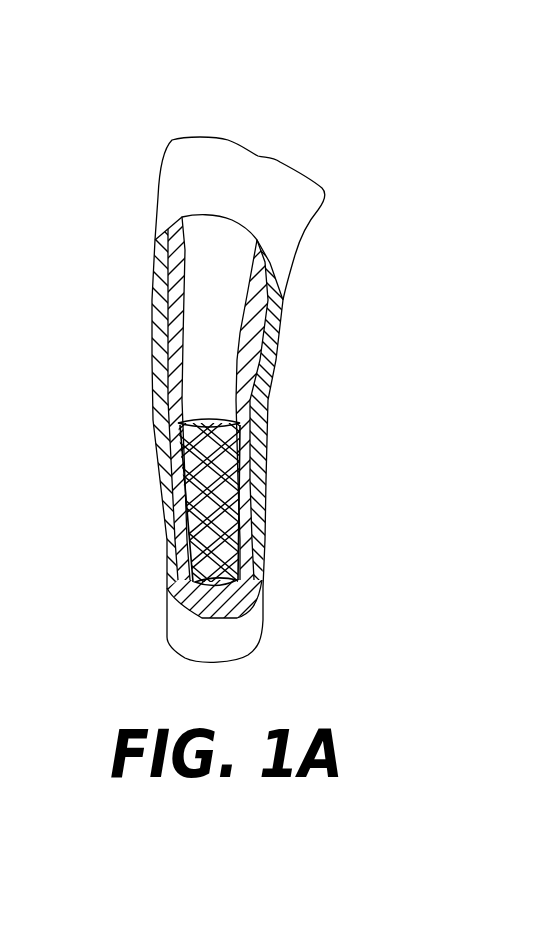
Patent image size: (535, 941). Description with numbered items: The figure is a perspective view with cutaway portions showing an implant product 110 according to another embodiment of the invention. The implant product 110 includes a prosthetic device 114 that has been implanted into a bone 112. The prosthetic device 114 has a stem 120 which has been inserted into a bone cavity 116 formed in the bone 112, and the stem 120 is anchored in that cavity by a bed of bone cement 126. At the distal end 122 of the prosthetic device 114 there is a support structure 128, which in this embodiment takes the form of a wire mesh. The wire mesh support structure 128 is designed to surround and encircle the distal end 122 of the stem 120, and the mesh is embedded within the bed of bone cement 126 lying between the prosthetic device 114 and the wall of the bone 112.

The implant product 110 is at (180, 106).
The bone 112 is at (297, 203).
The prosthetic device 114 is at (219, 397).
The bone cavity 116 is at (271, 145).
The stem 120 is at (240, 318).
The distal end 122 is at (240, 533).
The bone cement 126 is at (167, 357).
The support structure 128 is at (240, 458).